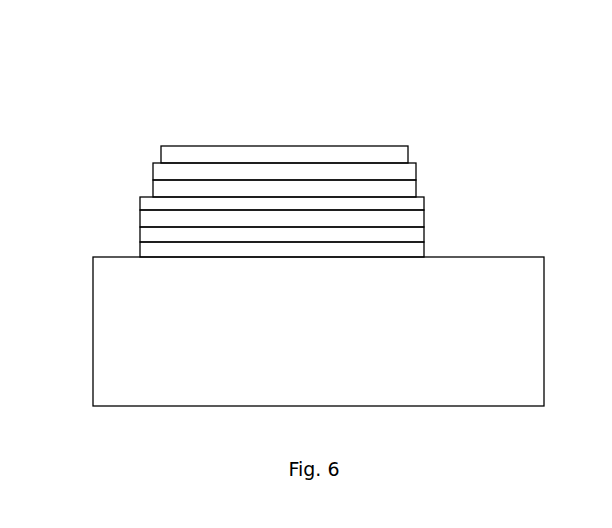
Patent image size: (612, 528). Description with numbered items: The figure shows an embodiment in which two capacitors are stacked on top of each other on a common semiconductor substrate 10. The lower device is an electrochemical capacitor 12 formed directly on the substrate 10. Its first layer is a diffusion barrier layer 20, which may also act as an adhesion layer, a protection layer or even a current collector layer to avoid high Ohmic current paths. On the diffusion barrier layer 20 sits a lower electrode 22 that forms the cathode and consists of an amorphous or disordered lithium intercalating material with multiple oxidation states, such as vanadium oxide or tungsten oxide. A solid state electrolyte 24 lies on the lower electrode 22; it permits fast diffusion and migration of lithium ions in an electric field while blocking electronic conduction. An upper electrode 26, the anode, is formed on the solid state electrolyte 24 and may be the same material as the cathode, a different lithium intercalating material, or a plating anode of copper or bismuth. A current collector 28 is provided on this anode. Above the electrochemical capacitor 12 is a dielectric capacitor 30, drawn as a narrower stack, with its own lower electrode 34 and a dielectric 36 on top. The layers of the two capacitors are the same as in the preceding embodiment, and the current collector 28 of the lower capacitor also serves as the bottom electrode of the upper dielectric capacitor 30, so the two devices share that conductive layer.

The semiconductor substrate 10 is at (123, 331).
The electrochemical capacitor 12 is at (120, 188).
The diffusion barrier layer 20 is at (152, 249).
The lower electrode 22 is at (173, 236).
The solid state electrolyte 24 is at (154, 218).
The upper electrode 26 is at (146, 207).
The current collector 28 is at (399, 187).
The dielectric capacitor 30 is at (501, 118).
The lower electrode 34 is at (398, 173).
The dielectric 36 is at (395, 155).